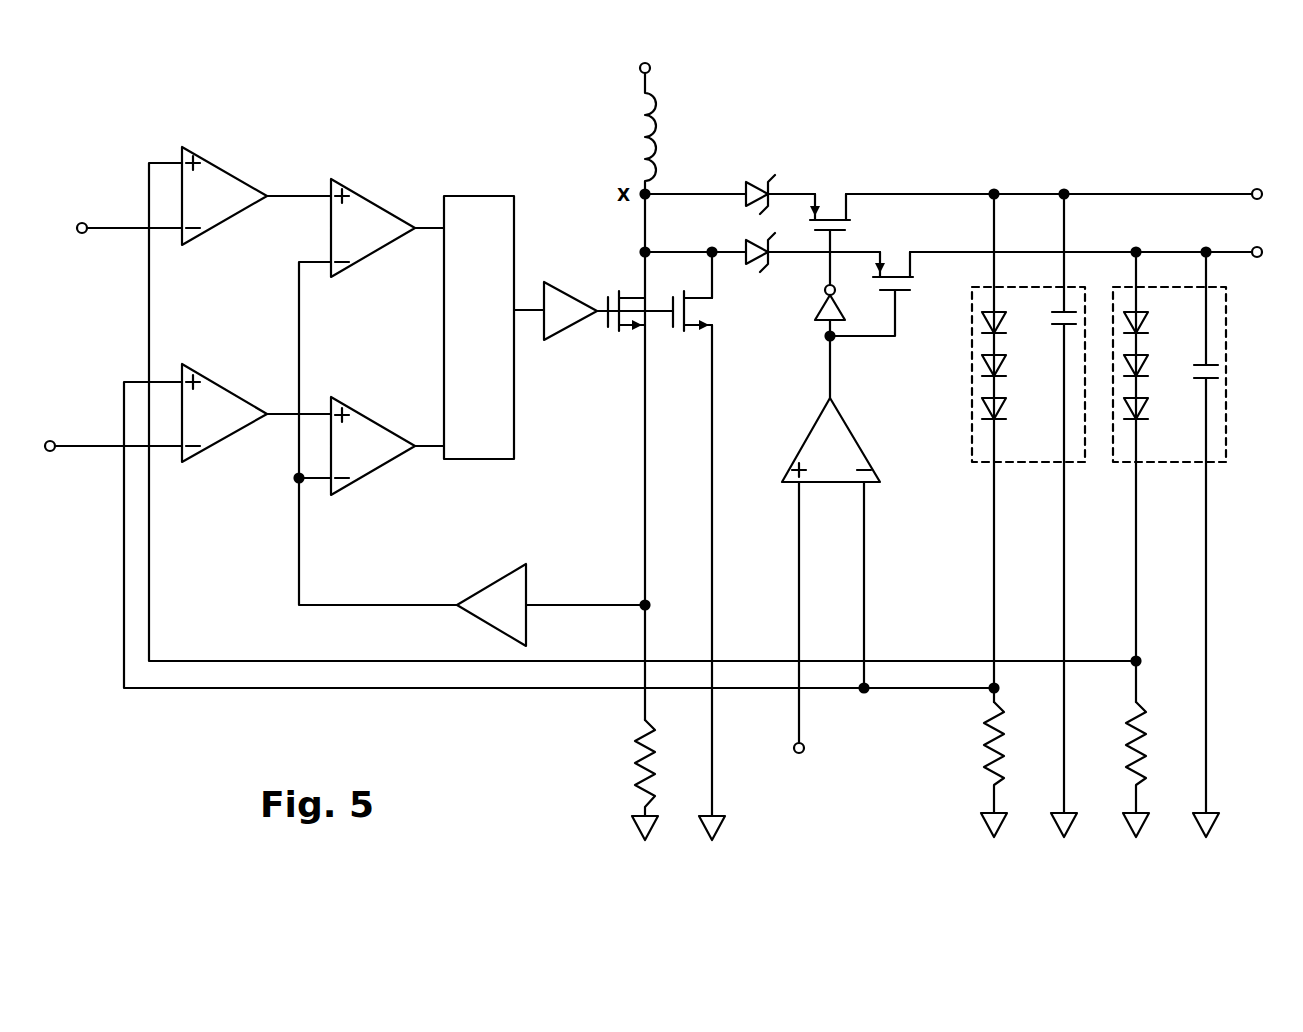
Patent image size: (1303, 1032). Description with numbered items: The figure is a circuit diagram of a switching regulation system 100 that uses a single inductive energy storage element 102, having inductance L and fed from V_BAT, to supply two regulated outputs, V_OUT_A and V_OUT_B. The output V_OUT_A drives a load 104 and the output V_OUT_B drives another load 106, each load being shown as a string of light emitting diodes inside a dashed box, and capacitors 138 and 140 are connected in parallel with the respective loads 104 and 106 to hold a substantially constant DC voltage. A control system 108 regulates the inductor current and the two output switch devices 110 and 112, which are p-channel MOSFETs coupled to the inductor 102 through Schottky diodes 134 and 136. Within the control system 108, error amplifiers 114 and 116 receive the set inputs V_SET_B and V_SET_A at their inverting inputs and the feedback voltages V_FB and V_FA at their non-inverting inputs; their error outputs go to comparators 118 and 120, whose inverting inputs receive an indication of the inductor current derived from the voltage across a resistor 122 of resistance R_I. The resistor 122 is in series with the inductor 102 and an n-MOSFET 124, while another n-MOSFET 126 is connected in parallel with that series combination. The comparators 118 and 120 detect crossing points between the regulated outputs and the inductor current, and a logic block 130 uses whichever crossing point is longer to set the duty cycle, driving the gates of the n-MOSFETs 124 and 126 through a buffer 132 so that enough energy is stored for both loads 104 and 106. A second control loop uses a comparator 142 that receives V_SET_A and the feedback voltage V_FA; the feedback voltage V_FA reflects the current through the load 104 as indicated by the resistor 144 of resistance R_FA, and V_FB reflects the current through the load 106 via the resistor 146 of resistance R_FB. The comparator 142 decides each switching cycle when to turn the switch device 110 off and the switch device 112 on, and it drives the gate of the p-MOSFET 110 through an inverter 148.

The switching regulation system 100 is at (1066, 112).
The inductive energy storage element 102 is at (638, 126).
The load 104 is at (1075, 462).
The load 106 is at (1216, 462).
The control system 108 is at (234, 105).
The switch device 110 is at (837, 173).
The switch device 112 is at (902, 238).
The error amplifier 114 is at (240, 210).
The error amplifier 116 is at (238, 430).
The comparator 118 is at (358, 185).
The comparator 120 is at (354, 404).
The resistor 122 is at (642, 782).
The n-MOSFET 124 is at (620, 342).
The n-MOSFET 126 is at (720, 322).
The logic block 130 is at (464, 194).
The buffer 132 is at (570, 290).
The diode 134 is at (762, 182).
The diode 136 is at (764, 252).
The capacitor 138 is at (1055, 330).
The capacitor 140 is at (1215, 385).
The comparator 142 is at (800, 450).
The resistor 144 is at (1002, 746).
The resistor 146 is at (1145, 746).
The inverter 148 is at (822, 306).